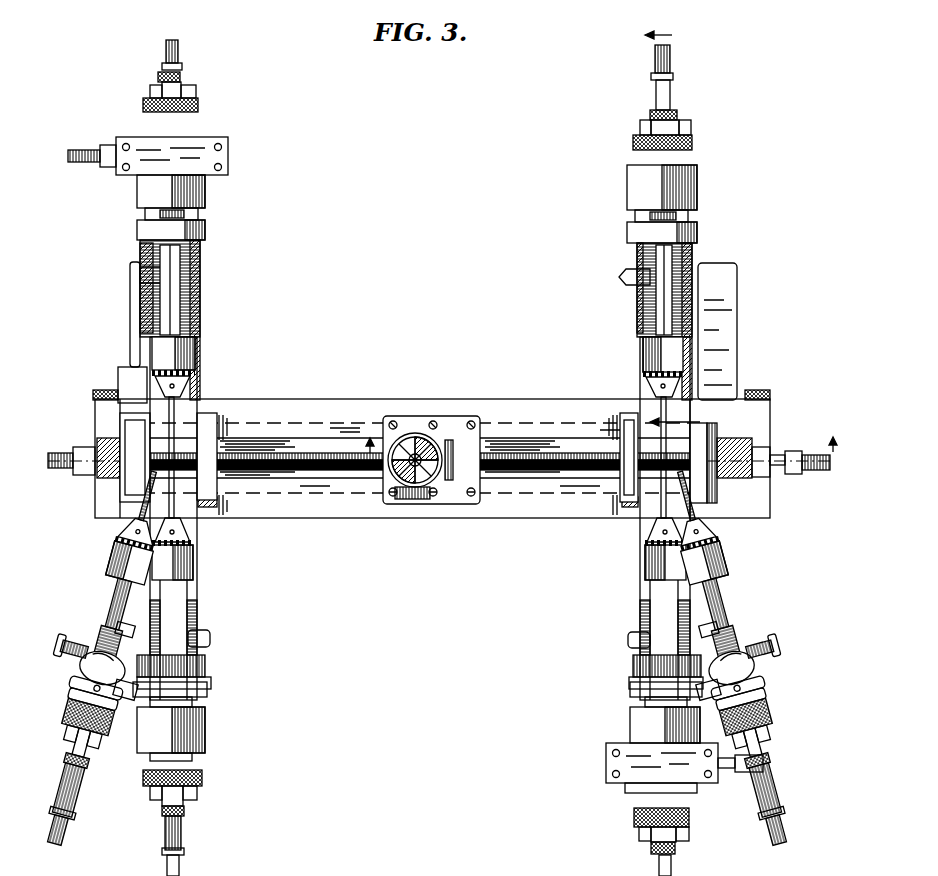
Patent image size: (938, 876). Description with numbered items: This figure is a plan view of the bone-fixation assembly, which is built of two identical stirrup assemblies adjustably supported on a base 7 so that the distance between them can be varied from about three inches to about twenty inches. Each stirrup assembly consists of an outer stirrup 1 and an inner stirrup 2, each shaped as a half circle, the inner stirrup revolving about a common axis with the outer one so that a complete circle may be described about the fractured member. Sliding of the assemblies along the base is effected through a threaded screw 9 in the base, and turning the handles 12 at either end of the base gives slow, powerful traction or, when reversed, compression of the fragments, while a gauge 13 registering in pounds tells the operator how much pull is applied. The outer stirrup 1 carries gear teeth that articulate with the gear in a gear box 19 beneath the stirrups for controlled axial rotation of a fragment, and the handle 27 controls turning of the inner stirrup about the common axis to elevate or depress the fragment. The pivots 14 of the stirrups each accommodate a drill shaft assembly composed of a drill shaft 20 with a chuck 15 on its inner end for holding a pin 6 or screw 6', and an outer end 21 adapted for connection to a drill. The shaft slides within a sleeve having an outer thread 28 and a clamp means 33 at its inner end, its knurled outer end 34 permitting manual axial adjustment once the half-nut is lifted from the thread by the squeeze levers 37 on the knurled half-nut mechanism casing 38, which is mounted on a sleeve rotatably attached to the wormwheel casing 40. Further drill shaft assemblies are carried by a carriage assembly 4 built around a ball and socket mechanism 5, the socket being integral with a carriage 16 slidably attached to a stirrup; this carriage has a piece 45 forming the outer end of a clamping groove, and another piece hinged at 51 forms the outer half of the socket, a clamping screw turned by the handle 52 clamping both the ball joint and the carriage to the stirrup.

The outer stirrup 1 is at (200, 217).
The inner stirrup 2 is at (200, 303).
The carriage assembly 4 is at (784, 691).
The ball and socket mechanism 5 is at (76, 672).
The pin 6 is at (462, 446).
The screw 6' is at (417, 496).
The base 7 is at (432, 400).
The threaded screw 9 is at (305, 452).
The handles 12 is at (62, 468).
The gauge 13 is at (441, 500).
The pivots 14 is at (145, 232).
The chuck 15 is at (195, 353).
The carriage 16 is at (134, 693).
The gear box 19 is at (216, 433).
The drill shaft 20 is at (168, 316).
The outer end of drill shaft 21 is at (167, 52).
The handle 27 is at (84, 163).
The outer thread of sleeve 28 is at (200, 256).
The clamp means 33 is at (150, 270).
The knurled outer end of sleeve 34 is at (182, 75).
The squeeze levers 37 is at (154, 88).
The half-nut mechanism casing 38 is at (200, 106).
The wormwheel casing 40 is at (230, 152).
The piece forming outer end of clamping groove 45 is at (212, 682).
The hinge 51 is at (80, 682).
The handle 52 is at (60, 648).